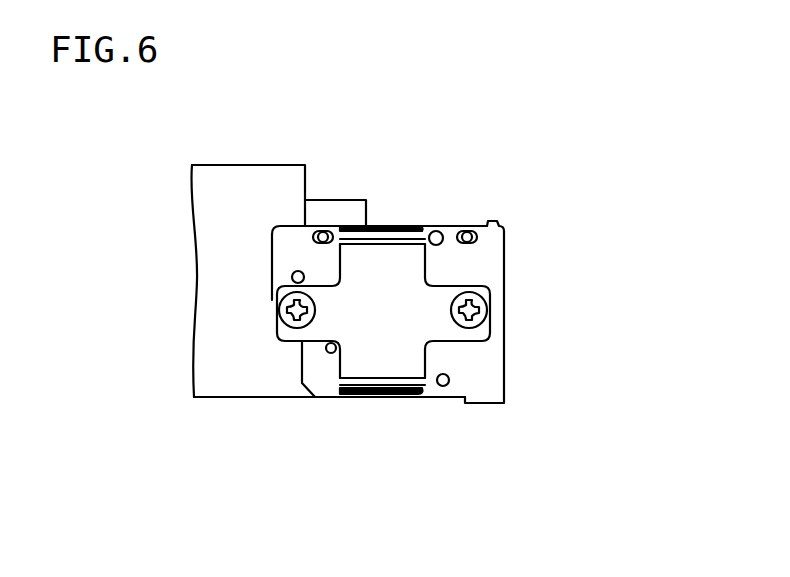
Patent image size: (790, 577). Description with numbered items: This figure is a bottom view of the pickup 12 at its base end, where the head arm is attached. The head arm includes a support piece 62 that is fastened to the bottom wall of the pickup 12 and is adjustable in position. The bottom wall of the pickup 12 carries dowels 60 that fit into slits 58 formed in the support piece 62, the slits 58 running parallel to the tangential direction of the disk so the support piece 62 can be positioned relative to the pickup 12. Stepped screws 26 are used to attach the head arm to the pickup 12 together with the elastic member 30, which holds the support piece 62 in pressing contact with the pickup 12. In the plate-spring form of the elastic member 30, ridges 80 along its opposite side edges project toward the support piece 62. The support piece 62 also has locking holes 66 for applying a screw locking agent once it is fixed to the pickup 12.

The pickup 12 is at (224, 382).
The stepped screws 26 is at (285, 322).
The elastic member 30 is at (402, 353).
The slits 58 is at (312, 238).
The dowels 60 is at (327, 227).
The support piece 62 is at (492, 375).
The locking holes 66 is at (436, 231).
The ridges 80 is at (395, 222).